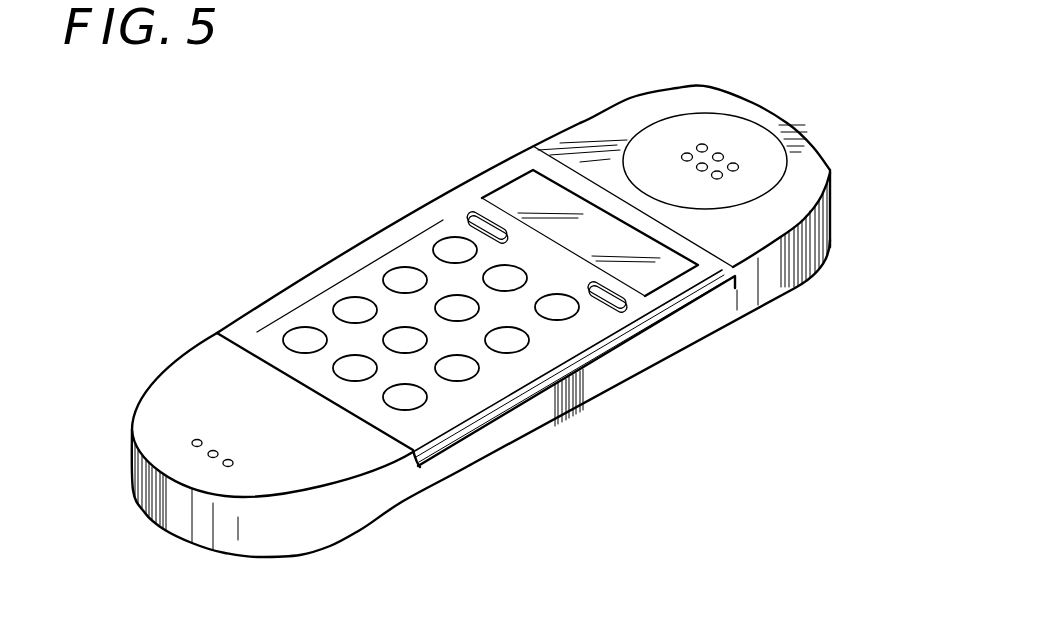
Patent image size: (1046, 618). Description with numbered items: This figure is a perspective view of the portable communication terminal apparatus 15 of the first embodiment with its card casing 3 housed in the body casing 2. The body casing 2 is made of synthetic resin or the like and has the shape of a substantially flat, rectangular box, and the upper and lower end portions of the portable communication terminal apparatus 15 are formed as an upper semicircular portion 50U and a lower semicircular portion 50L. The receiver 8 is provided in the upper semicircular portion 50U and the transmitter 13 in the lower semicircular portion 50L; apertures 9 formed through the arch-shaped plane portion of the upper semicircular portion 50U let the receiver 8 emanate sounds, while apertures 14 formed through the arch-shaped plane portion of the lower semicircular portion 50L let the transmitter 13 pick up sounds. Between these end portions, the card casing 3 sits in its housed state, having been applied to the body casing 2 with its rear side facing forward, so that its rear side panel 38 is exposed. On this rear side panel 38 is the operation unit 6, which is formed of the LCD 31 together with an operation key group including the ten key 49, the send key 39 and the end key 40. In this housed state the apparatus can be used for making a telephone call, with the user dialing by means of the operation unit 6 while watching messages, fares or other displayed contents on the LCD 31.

The portable communication terminal apparatus 15 is at (366, 168).
The body casing 2 is at (800, 262).
The card casing 3 is at (580, 348).
The operation unit 6 is at (343, 268).
The receiver 8 is at (740, 130).
The apertures 9 is at (687, 150).
The transmitter 13 is at (297, 467).
The apertures 14 is at (196, 438).
The LCD 31 is at (548, 192).
The rear side panel 38 is at (485, 385).
The send key 39 is at (472, 212).
The end key 40 is at (627, 303).
The ten key 49 is at (422, 403).
The lower semicircular portion 50L is at (192, 467).
The upper semicircular portion 50U is at (783, 130).